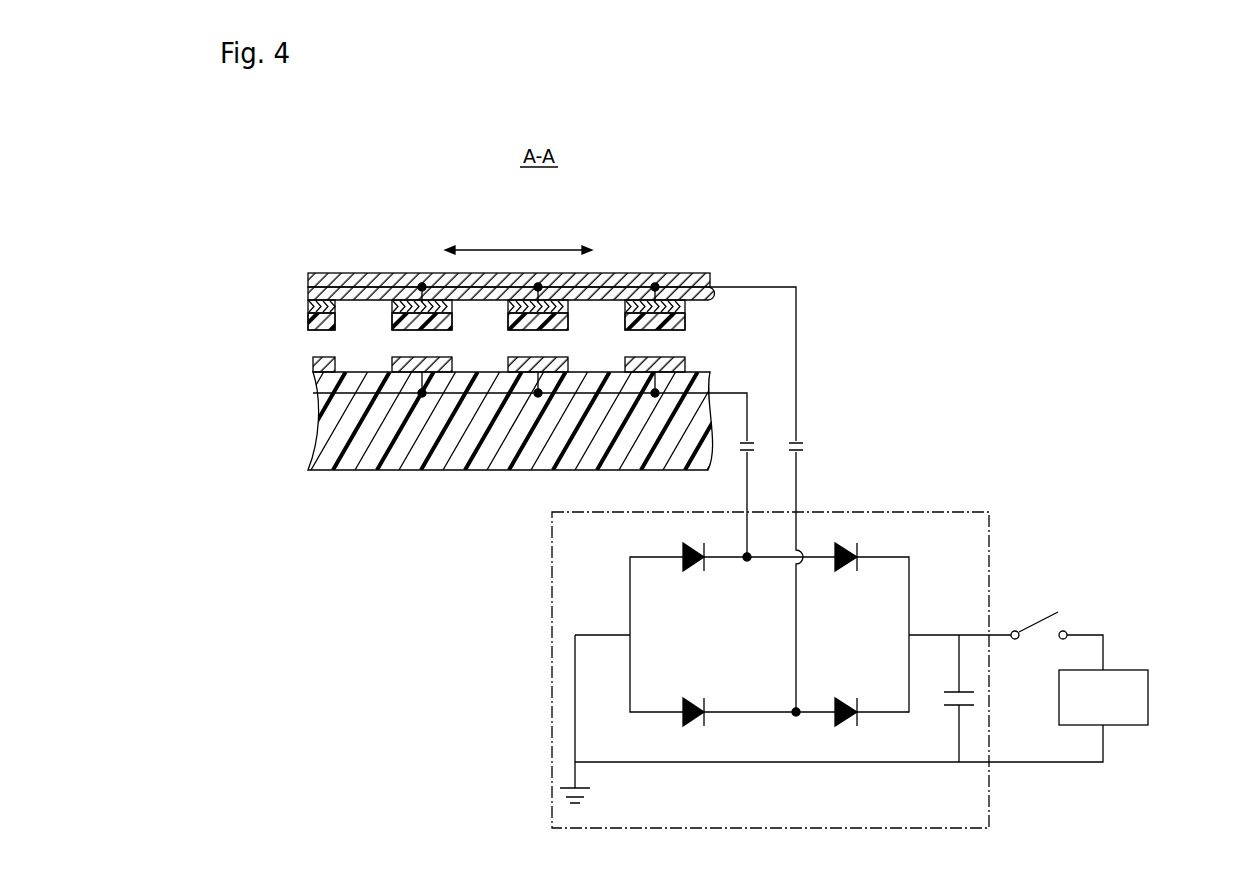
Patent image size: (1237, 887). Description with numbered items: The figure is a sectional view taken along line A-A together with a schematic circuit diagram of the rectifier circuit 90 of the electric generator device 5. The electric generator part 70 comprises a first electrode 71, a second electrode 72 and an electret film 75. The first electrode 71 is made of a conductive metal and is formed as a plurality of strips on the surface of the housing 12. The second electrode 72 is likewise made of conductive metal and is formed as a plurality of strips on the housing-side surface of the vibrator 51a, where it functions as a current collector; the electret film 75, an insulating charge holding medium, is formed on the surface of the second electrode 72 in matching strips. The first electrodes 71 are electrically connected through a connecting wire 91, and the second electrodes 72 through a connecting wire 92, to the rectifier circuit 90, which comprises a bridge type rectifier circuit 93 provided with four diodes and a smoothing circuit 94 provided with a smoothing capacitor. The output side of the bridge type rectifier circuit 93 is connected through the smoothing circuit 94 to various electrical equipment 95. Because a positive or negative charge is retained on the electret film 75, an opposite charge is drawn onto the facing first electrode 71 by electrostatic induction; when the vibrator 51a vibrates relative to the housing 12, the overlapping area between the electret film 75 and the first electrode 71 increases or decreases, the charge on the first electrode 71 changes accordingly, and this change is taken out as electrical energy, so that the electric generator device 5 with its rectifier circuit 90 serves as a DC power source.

The electric generator device 5 is at (299, 246).
The vibrator 51a is at (360, 272).
The electric generator part 70 is at (680, 264).
The second electrode 72 is at (305, 310).
The electret film 75 is at (310, 318).
The first electrode 71 is at (318, 365).
The housing 12 is at (320, 448).
The connecting wire 91 is at (733, 393).
The connecting wire 92 is at (768, 286).
The rectifier circuit 90 is at (963, 511).
The bridge type rectifier circuit 93 is at (824, 533).
The smoothing circuit 94 is at (979, 726).
The electrical equipment 95 is at (1148, 697).